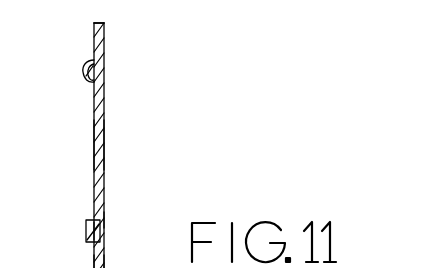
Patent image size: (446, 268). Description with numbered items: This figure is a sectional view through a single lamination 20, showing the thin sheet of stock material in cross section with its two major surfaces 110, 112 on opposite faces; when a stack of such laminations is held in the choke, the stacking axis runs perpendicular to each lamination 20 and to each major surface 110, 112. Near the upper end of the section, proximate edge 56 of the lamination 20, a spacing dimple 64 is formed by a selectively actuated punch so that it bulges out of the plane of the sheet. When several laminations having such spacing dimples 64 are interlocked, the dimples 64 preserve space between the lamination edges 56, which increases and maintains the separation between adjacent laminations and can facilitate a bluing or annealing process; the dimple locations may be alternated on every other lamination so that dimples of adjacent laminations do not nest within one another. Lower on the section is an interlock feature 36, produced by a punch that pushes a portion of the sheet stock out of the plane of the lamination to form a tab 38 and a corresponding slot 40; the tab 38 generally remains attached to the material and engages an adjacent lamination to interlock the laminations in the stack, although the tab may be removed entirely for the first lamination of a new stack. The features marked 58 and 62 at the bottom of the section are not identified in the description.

The lamination 20 is at (116, 127).
The edge 56 is at (102, 23).
The spacing dimple 64 is at (88, 68).
The major surface 110 is at (94, 145).
The major surface 112 is at (105, 148).
The interlock feature 36 is at (105, 220).
The tab 38 is at (86, 228).
The slot 40 is at (101, 230).
The lower portion 58 is at (63, 261).
The lower portion 62 is at (147, 261).